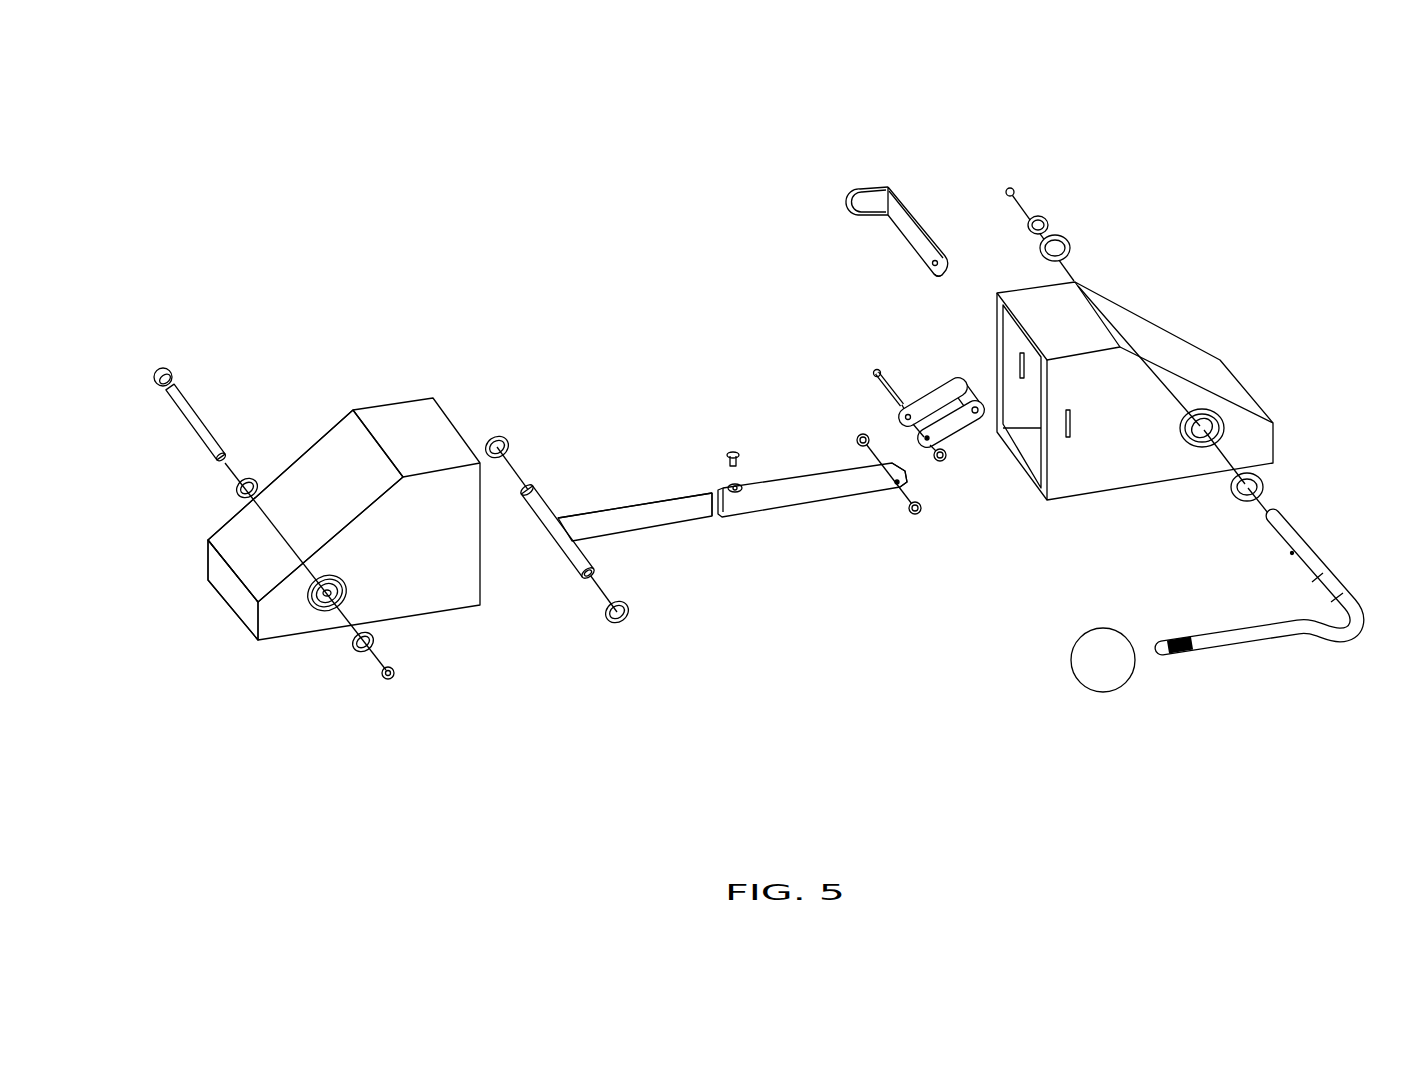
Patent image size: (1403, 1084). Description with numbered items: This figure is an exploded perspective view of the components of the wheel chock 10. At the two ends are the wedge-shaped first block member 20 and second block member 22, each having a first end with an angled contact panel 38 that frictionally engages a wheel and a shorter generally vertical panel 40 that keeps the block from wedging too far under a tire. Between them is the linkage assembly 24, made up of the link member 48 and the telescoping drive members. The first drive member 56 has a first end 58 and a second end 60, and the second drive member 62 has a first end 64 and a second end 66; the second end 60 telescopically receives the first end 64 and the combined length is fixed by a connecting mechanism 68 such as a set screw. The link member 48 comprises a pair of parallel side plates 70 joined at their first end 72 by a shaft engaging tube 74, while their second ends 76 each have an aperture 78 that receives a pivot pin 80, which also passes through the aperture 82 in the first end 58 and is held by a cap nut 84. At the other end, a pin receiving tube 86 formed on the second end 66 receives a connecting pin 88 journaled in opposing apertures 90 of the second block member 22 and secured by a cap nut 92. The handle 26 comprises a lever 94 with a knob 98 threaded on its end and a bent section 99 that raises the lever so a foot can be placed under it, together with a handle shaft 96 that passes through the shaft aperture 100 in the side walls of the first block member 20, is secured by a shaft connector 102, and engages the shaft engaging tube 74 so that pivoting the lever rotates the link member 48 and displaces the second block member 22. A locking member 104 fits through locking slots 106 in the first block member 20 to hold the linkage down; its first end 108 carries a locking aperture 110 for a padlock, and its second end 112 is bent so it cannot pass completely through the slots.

The wheel chock 10 is at (690, 348).
The first block member 20 is at (1144, 332).
The second block member 22 is at (328, 522).
The linkage assembly 24 is at (701, 524).
The handle 26 is at (1268, 582).
The angled contact panel 38 is at (222, 532).
The vertical panel 40 is at (245, 612).
The link member 48 is at (919, 449).
The first drive member 56 is at (768, 502).
The first end of first drive member 58 is at (866, 502).
The second end of first drive member 60 is at (717, 481).
The second drive member 62 is at (660, 507).
The first end of second drive member 64 is at (702, 524).
The second end of second drive member 66 is at (558, 506).
The connecting mechanism 68 is at (735, 450).
The side plates 70 is at (928, 405).
The first end of side plates 72 is at (980, 420).
The shaft engaging tube 74 is at (962, 385).
The second ends of side plates 76 is at (925, 448).
The aperture 78 is at (907, 428).
The pivot pin 80 is at (875, 371).
The aperture 82 is at (897, 490).
The cap nut 84 is at (944, 462).
The pin receiving tube 86 is at (560, 542).
The connecting pin 88 is at (203, 424).
The apertures 90 is at (327, 602).
The cap nut 92 is at (388, 683).
The lever 94 is at (1240, 640).
The handle shaft 96 is at (1282, 527).
The knob 98 is at (1105, 688).
The bent section 99 is at (1270, 612).
The shaft aperture 100 is at (1222, 418).
The shaft connector 102 is at (1010, 186).
The locking member 104 is at (863, 228).
The locking slots 106 is at (1070, 440).
The first end of locking member 108 is at (937, 279).
The locking aperture 110 is at (925, 259).
The second end of locking member 112 is at (870, 196).